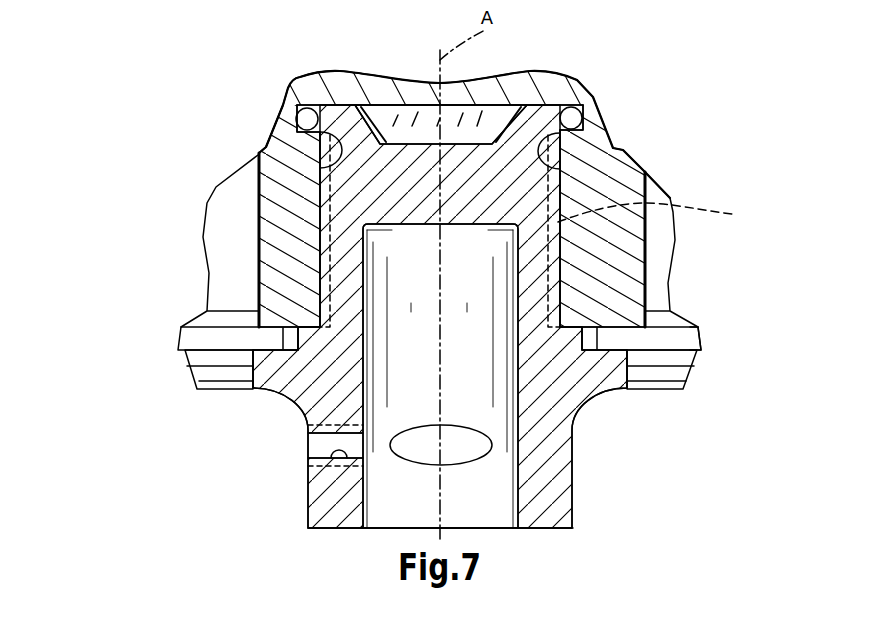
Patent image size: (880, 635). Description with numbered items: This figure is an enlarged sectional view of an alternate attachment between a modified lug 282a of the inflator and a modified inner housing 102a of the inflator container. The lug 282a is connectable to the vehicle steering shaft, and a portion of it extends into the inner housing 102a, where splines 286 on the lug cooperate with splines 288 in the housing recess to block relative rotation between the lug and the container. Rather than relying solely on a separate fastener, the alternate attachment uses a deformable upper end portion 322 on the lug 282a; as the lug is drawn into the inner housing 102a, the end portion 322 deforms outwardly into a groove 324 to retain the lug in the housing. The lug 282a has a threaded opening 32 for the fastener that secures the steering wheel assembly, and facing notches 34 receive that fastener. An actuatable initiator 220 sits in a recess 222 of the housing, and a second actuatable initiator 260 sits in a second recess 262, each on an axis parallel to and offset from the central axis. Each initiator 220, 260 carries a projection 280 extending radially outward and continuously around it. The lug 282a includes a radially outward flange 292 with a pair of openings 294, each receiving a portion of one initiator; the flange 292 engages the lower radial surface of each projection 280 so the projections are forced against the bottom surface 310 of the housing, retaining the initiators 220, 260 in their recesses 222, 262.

The modified inner housing 102a is at (622, 151).
The second recess 262 is at (257, 171).
The groove 324 is at (297, 106).
The deformable upper end portion 322 is at (310, 117).
The splines 288 is at (556, 146).
The modified lug 282a is at (300, 459).
The threaded opening 32 is at (331, 459).
The facing notches 34 is at (451, 460).
The second actuatable initiator 260 is at (215, 189).
The actuatable initiator 220 is at (677, 247).
The recess 222 is at (652, 189).
The splines 286 is at (669, 215).
The projection 280 is at (267, 338).
The bottom surface 310 is at (704, 330).
The flange 292 is at (257, 365).
The openings 294 is at (242, 381).